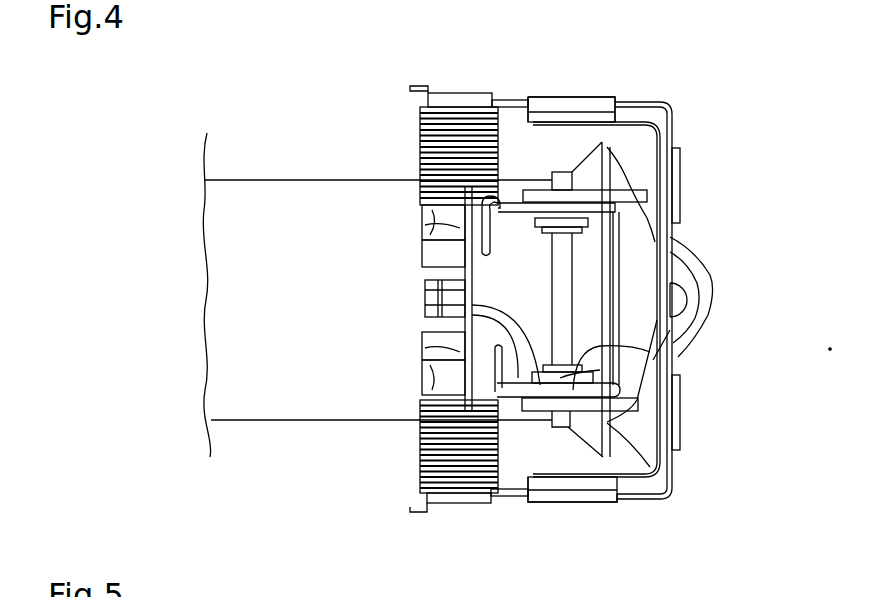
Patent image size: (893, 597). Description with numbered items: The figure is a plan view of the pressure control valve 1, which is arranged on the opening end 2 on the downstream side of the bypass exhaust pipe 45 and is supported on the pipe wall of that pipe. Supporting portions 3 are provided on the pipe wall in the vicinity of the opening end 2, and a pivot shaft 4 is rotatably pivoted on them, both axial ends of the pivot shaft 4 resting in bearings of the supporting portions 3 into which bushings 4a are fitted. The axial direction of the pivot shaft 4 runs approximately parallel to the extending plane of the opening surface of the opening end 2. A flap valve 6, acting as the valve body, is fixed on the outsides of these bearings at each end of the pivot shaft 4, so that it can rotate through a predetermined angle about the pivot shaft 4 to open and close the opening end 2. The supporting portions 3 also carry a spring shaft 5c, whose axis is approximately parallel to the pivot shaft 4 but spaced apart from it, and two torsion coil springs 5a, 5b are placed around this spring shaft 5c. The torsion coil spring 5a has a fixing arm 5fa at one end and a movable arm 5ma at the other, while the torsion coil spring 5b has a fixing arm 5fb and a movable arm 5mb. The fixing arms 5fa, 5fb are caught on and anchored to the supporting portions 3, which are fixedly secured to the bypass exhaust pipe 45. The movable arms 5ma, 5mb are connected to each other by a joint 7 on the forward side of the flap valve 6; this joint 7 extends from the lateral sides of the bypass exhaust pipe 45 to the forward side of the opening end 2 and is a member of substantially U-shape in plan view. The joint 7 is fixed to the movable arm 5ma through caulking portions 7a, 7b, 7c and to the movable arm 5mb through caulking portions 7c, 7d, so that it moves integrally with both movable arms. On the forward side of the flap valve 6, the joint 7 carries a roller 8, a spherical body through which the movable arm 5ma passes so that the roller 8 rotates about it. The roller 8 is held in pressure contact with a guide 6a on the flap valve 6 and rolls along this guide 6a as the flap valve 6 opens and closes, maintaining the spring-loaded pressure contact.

The pressure control valve 1 is at (358, 84).
The opening end 2 is at (672, 481).
The supporting portions 3 is at (425, 305).
The pivot shaft 4 is at (552, 283).
The bushings 4a is at (600, 398).
The torsion coil spring 5a is at (420, 148).
The torsion coil spring 5b is at (420, 461).
The spring shaft 5c is at (452, 92).
The fixing arm 5fa is at (430, 230).
The fixing arm 5fb is at (432, 349).
The movable arm 5ma is at (511, 107).
The movable arm 5mb is at (506, 502).
The flap valve 6 is at (640, 247).
The guide 6a is at (662, 333).
The joint 7 is at (695, 277).
The caulking portion 7a is at (572, 120).
The caulking portion 7b is at (680, 177).
The caulking portion 7c is at (680, 443).
The caulking portion 7d is at (578, 504).
The roller 8 is at (682, 302).
The bypass exhaust pipe 45 is at (263, 192).